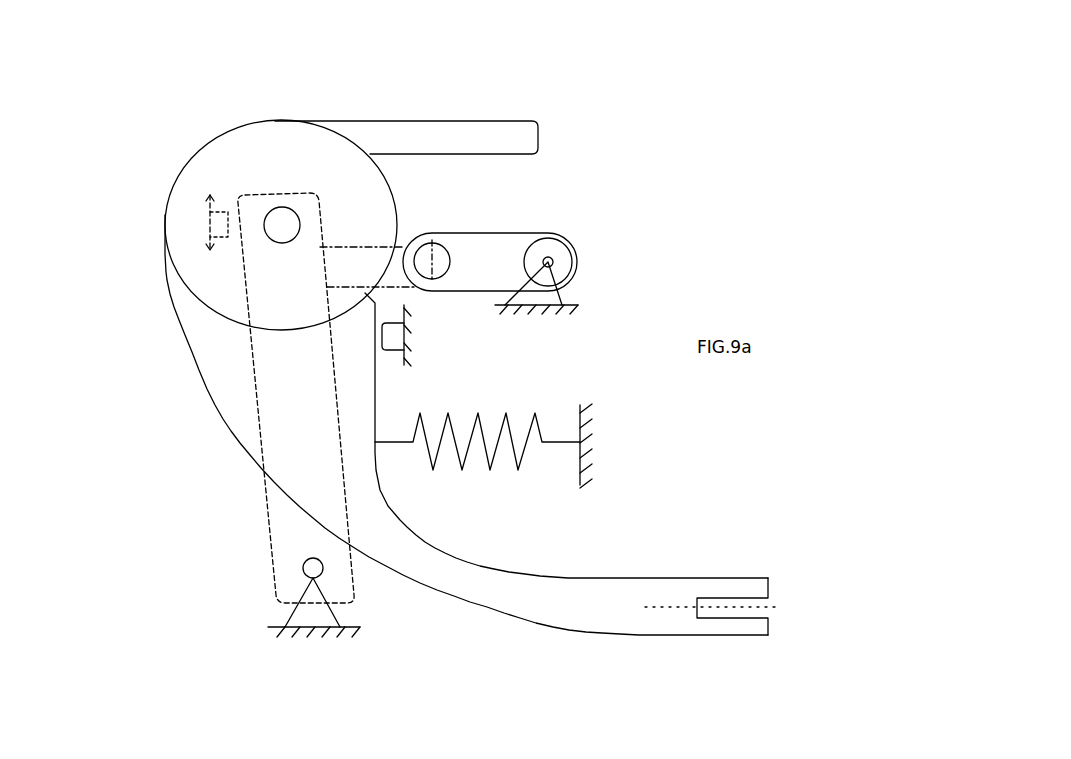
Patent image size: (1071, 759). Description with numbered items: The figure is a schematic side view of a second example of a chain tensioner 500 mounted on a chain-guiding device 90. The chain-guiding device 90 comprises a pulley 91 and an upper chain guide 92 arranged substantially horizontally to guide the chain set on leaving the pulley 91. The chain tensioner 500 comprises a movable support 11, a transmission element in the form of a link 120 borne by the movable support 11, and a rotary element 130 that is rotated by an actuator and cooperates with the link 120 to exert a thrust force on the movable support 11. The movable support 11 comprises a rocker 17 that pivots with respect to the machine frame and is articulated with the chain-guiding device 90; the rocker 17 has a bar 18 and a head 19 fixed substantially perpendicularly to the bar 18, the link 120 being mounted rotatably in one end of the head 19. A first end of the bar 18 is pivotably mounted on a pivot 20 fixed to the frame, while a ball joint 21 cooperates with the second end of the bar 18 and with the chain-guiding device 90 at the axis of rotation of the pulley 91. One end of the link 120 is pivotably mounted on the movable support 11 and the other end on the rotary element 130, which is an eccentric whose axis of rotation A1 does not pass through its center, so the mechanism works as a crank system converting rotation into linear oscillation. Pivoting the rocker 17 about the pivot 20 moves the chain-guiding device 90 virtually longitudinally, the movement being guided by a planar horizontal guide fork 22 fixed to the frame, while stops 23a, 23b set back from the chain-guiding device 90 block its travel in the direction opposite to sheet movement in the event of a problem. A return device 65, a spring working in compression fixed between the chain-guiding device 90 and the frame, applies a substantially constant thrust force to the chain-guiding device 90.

The chain tensioner 500 is at (663, 140).
The chain-guiding device 90 is at (188, 107).
The pulley 91 is at (188, 159).
The ball joint 21 is at (282, 208).
The stop 23a is at (220, 221).
The upper chain guide 92 is at (425, 137).
The head 19 is at (367, 250).
The link 120 is at (490, 253).
The axis of rotation A1 is at (530, 267).
The rotary element 130 is at (582, 268).
The movable support 11 is at (252, 550).
The bar 18 is at (259, 432).
The rocker 17 is at (293, 487).
The pivot 20 is at (308, 572).
The guide fork 22 is at (718, 588).
The stop 23b is at (403, 333).
The return device 65 is at (516, 489).